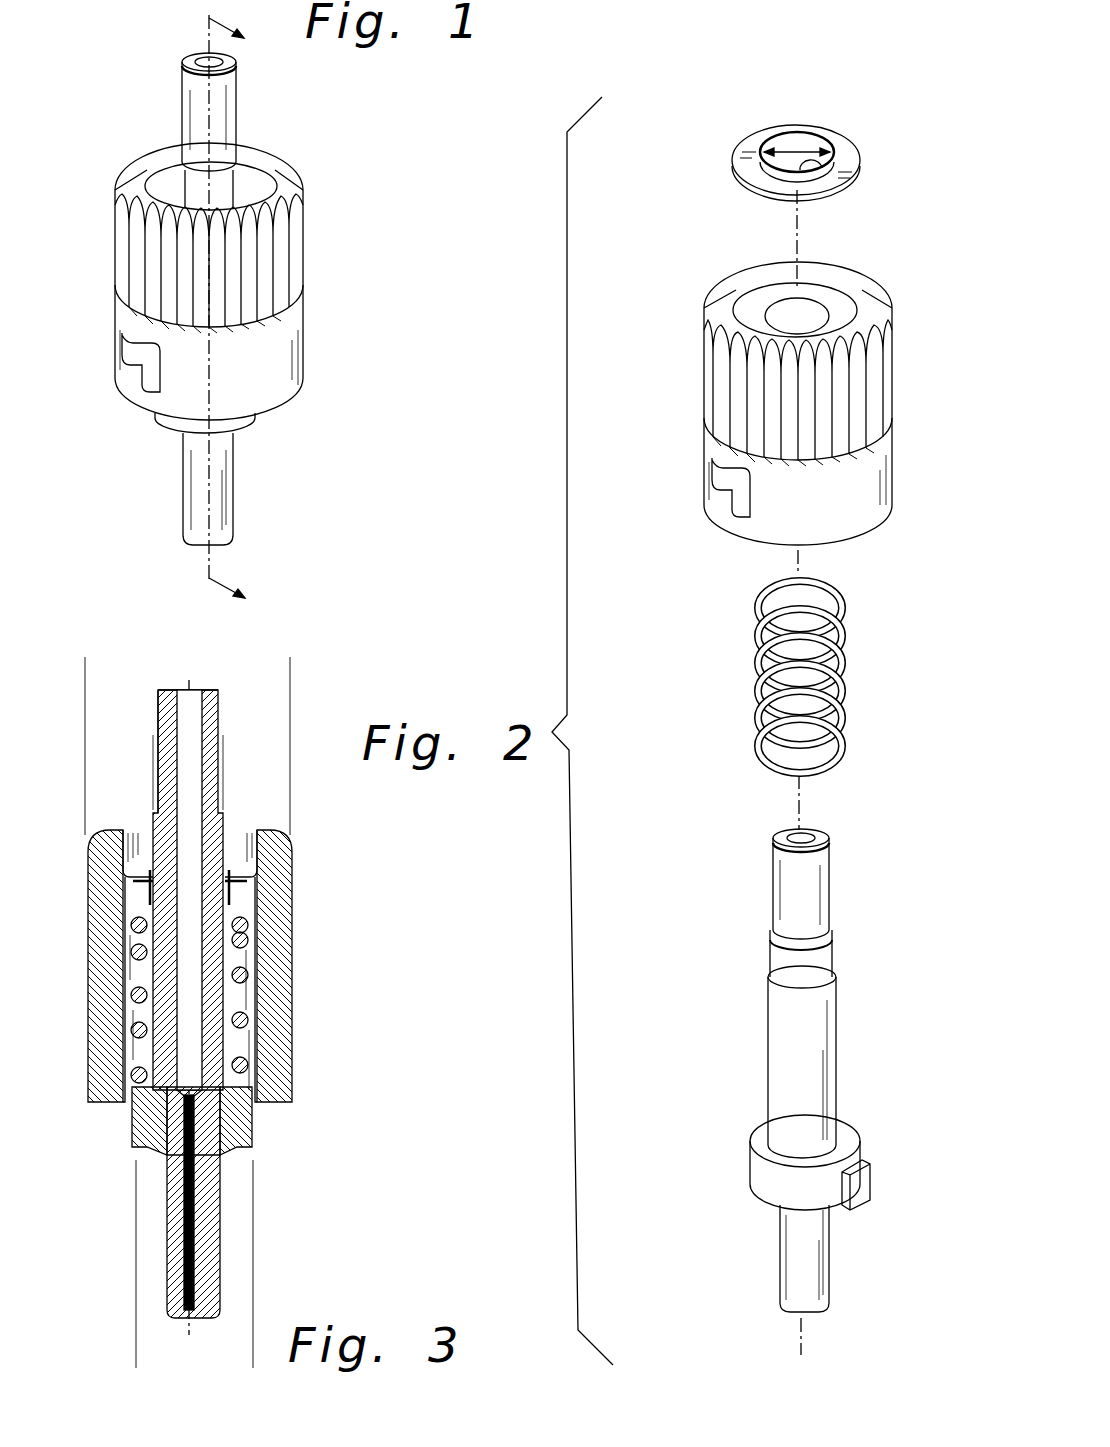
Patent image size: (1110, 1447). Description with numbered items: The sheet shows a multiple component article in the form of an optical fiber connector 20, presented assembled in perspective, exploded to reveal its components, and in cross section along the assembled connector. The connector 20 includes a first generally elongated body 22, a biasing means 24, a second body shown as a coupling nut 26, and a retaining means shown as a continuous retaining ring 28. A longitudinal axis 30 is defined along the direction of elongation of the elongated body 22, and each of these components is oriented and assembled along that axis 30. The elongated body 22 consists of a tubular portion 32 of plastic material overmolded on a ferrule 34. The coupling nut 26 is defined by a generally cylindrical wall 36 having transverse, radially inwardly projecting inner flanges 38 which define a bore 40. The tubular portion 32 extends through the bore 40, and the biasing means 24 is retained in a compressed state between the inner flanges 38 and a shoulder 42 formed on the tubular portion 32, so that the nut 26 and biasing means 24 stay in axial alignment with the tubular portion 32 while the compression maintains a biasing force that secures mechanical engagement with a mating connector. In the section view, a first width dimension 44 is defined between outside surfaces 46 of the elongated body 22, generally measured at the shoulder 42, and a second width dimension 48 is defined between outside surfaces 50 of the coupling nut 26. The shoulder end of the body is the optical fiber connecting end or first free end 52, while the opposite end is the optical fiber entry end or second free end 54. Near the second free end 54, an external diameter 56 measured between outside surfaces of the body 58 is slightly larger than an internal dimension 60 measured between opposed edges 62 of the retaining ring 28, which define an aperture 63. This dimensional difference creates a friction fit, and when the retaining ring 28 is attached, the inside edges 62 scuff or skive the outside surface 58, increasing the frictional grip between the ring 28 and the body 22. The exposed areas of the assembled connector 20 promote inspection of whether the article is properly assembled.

In FIG. 1, the optical fiber connector 20 is at (135, 110).
In FIG. 2, the optical fiber connector 20 is at (805, 75).
In FIG. 3, the optical fiber connector 20 is at (398, 935).
In FIG. 2, the elongated body 22 is at (748, 1000).
In FIG. 2, the biasing means 24 is at (755, 612).
In FIG. 3, the biasing means 24 is at (270, 1055).
In FIG. 2, the coupling nut 26 is at (688, 465).
In FIG. 3, the coupling nut 26 is at (296, 1040).
In FIG. 2, the retaining ring 28 is at (740, 195).
In FIG. 3, the retaining ring 28 is at (240, 865).
In FIG. 1, the longitudinal axis 30 is at (215, 18).
In FIG. 2, the longitudinal axis 30 is at (812, 805).
In FIG. 3, the longitudinal axis 30 is at (195, 730).
In FIG. 2, the tubular portion 32 is at (782, 1052).
In FIG. 3, the tubular portion 32 is at (250, 998).
In FIG. 2, the ferrule 34 is at (791, 1270).
In FIG. 3, the ferrule 34 is at (218, 1222).
In FIG. 2, the cylindrical wall 36 is at (742, 300).
In FIG. 3, the cylindrical wall 36 is at (118, 1065).
In FIG. 3, the inner flanges 38 is at (125, 915).
In FIG. 3, the bore 40 is at (135, 958).
In FIG. 2, the shoulder 42 is at (765, 1168).
In FIG. 3, the shoulder 42 is at (255, 1150).
In FIG. 3, the first width dimension 44 is at (253, 1357).
In FIG. 3, the outside surfaces 46 is at (135, 1125).
In FIG. 3, the second width dimension 48 is at (290, 665).
In FIG. 3, the outside surfaces 50 is at (92, 905).
In FIG. 1, the first free end 52 is at (222, 548).
In FIG. 2, the first free end 52 is at (800, 1313).
In FIG. 3, the first free end 52 is at (205, 1320).
In FIG. 1, the second free end 54 is at (190, 62).
In FIG. 2, the second free end 54 is at (782, 840).
In FIG. 3, the second free end 54 is at (165, 690).
In FIG. 3, the external diameter 56 is at (133, 742).
In FIG. 3, the outside surface 58 is at (158, 705).
In FIG. 2, the internal dimension 60 is at (822, 150).
In FIG. 3, the opposed edges 62 is at (130, 835).
In FIG. 2, the aperture 63 is at (815, 175).